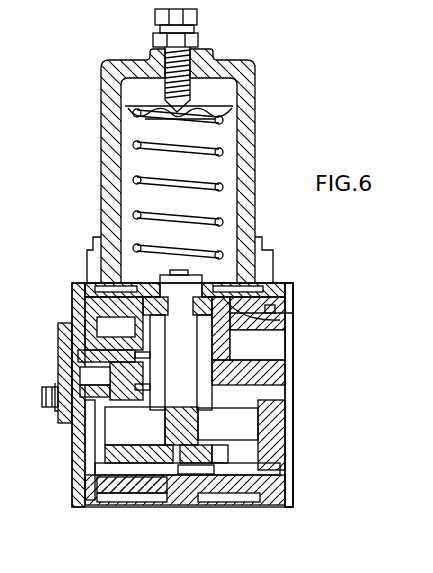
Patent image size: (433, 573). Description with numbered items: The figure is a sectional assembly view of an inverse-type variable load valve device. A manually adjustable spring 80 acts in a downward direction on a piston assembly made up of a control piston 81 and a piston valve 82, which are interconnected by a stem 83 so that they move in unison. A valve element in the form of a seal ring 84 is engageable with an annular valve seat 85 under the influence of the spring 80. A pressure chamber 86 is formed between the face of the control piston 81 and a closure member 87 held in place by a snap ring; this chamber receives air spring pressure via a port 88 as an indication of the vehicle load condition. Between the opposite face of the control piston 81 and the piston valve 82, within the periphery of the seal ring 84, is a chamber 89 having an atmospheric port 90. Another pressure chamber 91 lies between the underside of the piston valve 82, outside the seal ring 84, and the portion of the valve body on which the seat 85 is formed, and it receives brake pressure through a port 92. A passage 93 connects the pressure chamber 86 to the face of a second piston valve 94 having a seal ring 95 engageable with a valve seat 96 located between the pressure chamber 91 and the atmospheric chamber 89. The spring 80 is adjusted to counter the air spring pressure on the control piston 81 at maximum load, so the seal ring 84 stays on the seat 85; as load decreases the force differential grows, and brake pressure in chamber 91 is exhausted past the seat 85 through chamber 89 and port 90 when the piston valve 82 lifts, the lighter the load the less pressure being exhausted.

The manually adjustable spring 80 is at (135, 146).
The control piston 81 is at (258, 450).
The piston valve 82 is at (74, 286).
The stem 83 is at (175, 425).
The seal ring 84 is at (290, 294).
The annular valve seat 85 is at (276, 318).
The pressure chamber 86 is at (222, 473).
The closure member 87 is at (142, 485).
The port 88 is at (257, 470).
The chamber 89 is at (248, 422).
The atmospheric port 90 is at (293, 399).
The pressure chamber 91 is at (82, 312).
The port 92 is at (293, 335).
The passage 93 is at (88, 438).
The piston valve 94 is at (80, 359).
The seal ring 95 is at (137, 367).
The valve seat 96 is at (137, 387).